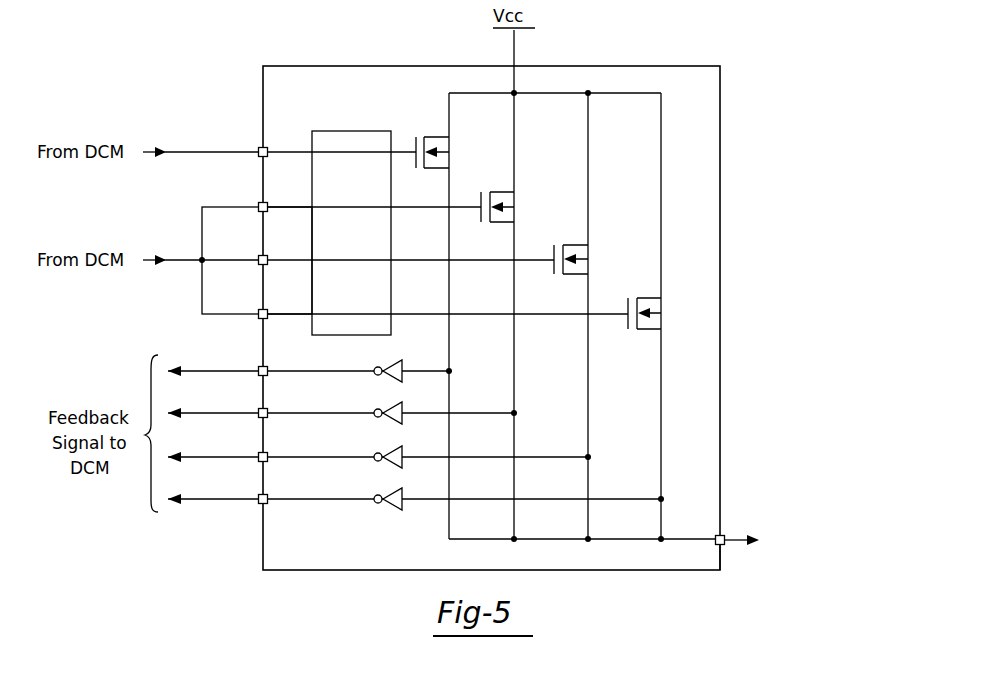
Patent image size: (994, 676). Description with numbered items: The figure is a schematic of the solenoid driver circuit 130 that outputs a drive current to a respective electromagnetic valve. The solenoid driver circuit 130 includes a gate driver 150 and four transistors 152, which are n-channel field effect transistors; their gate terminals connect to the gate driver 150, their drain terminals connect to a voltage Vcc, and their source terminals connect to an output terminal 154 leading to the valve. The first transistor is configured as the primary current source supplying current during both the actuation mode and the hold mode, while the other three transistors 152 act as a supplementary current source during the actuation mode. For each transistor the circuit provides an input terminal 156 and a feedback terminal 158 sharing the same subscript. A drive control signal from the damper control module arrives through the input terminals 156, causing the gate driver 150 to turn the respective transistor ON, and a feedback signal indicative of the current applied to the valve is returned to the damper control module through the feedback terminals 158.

The solenoid driver circuit 130 is at (720, 359).
The gate driver 150 is at (363, 131).
The transistors 152 is at (565, 314).
The output terminal 154 is at (724, 534).
The input terminal 156 is at (230, 208).
The feedback terminal 158 is at (416, 421).